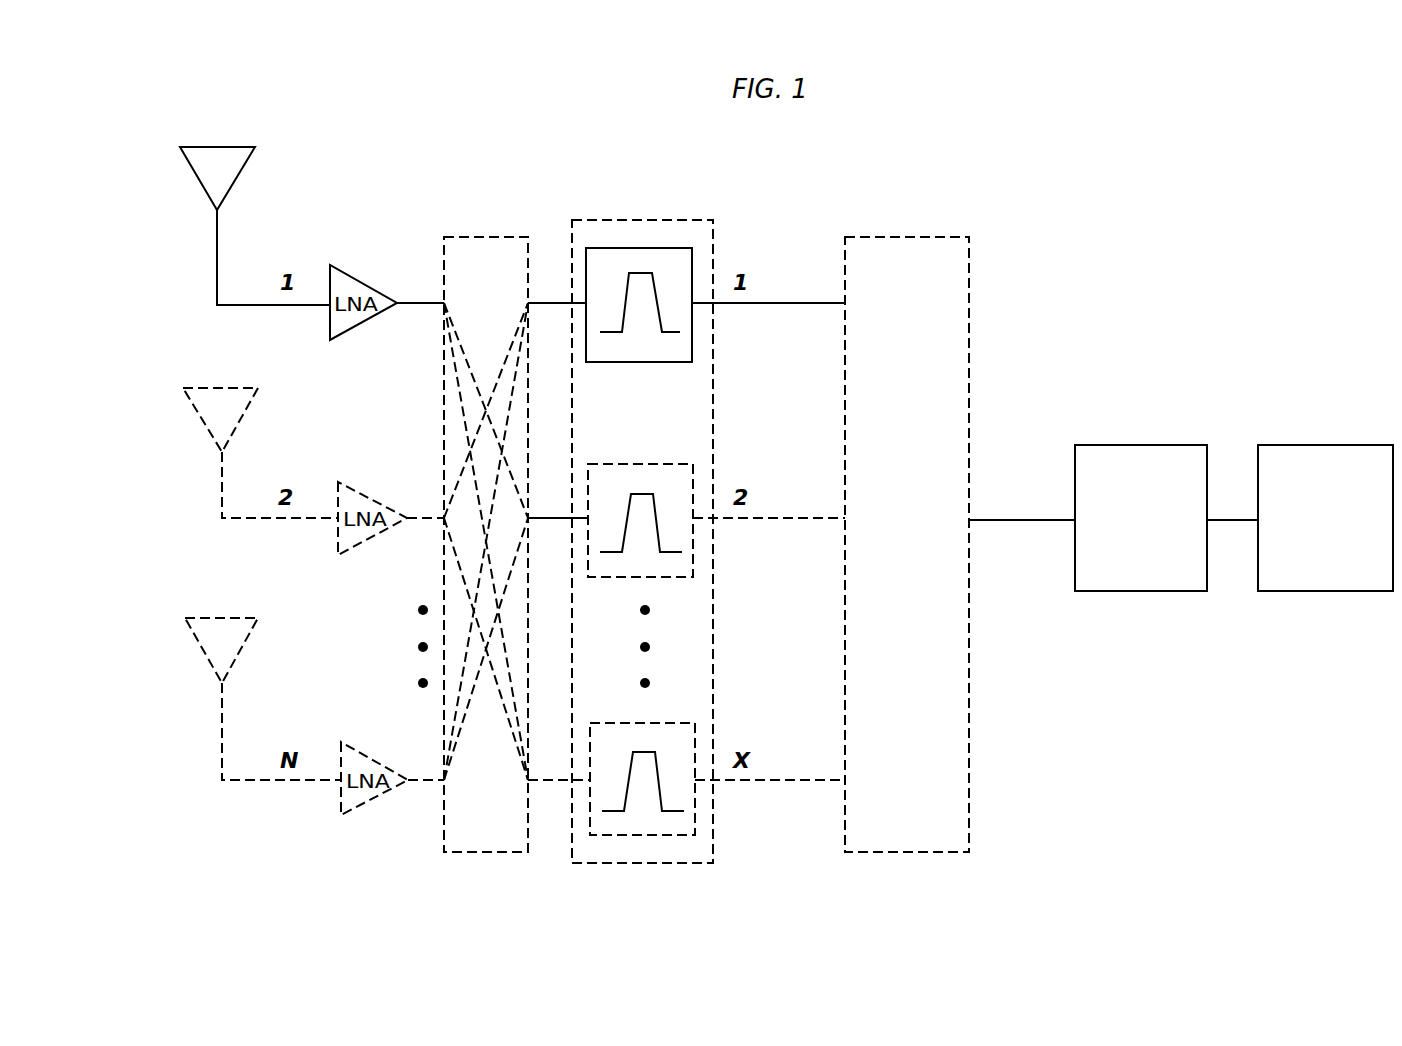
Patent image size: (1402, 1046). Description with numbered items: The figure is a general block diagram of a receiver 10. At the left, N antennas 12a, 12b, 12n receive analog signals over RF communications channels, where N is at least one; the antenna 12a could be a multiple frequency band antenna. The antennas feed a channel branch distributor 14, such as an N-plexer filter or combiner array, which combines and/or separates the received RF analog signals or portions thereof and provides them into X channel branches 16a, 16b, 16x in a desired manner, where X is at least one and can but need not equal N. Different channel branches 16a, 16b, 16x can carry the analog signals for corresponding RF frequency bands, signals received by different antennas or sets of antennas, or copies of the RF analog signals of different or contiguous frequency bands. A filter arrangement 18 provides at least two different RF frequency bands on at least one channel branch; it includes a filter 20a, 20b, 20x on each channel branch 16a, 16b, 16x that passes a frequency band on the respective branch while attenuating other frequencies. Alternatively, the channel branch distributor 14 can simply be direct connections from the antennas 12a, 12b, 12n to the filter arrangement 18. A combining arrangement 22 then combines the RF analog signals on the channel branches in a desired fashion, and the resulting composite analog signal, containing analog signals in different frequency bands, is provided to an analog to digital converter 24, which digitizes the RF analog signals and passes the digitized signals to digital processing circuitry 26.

The receiver 10 is at (1201, 251).
The antenna 12a is at (225, 147).
The antenna 12b is at (226, 388).
The antenna 12n is at (226, 618).
The channel branch distributor 14 is at (458, 237).
The channel branch 16a is at (553, 300).
The channel branch 16b is at (553, 515).
The channel branch 16x is at (553, 777).
The filter arrangement 18 is at (632, 220).
The filter 20a is at (692, 248).
The filter 20b is at (693, 464).
The filter 20x is at (693, 723).
The combining arrangement 22 is at (900, 237).
The analog to digital converter 24 is at (1142, 445).
The digital processing circuitry 26 is at (1328, 445).